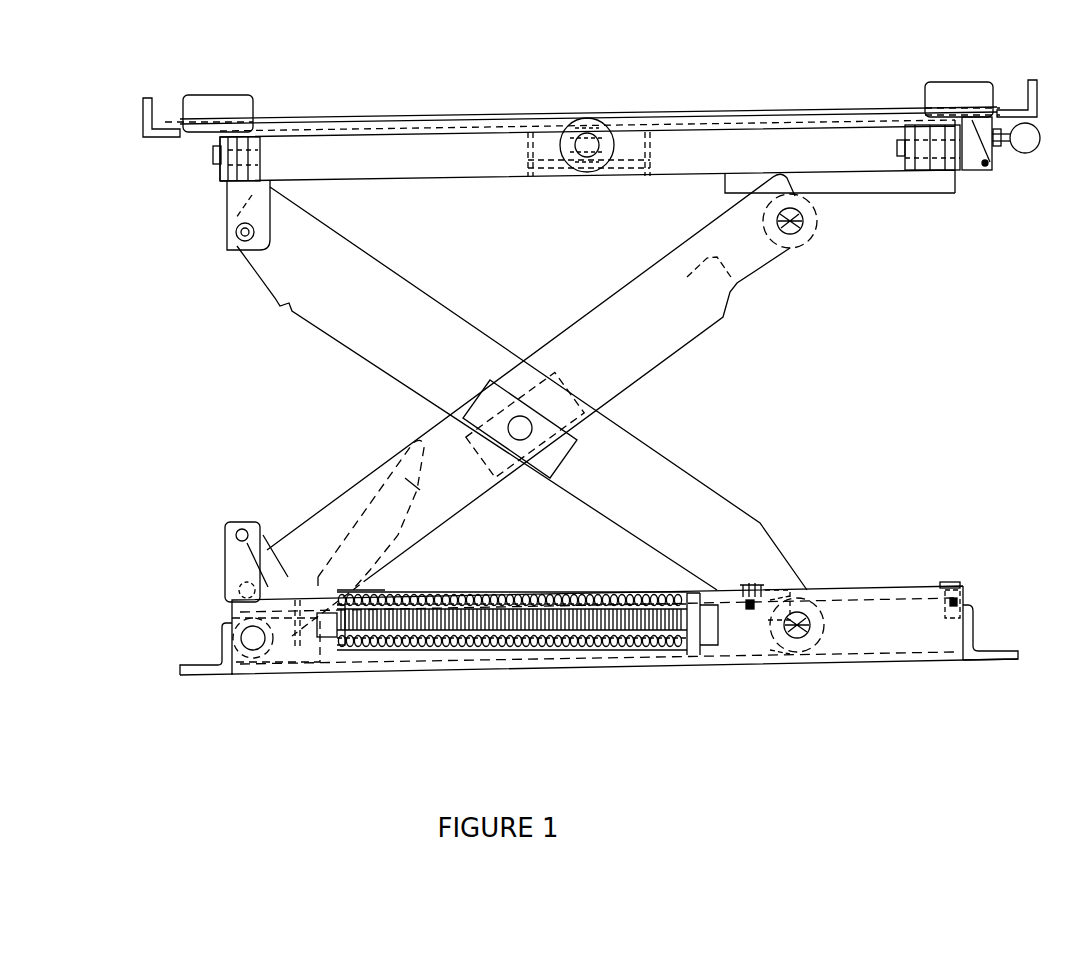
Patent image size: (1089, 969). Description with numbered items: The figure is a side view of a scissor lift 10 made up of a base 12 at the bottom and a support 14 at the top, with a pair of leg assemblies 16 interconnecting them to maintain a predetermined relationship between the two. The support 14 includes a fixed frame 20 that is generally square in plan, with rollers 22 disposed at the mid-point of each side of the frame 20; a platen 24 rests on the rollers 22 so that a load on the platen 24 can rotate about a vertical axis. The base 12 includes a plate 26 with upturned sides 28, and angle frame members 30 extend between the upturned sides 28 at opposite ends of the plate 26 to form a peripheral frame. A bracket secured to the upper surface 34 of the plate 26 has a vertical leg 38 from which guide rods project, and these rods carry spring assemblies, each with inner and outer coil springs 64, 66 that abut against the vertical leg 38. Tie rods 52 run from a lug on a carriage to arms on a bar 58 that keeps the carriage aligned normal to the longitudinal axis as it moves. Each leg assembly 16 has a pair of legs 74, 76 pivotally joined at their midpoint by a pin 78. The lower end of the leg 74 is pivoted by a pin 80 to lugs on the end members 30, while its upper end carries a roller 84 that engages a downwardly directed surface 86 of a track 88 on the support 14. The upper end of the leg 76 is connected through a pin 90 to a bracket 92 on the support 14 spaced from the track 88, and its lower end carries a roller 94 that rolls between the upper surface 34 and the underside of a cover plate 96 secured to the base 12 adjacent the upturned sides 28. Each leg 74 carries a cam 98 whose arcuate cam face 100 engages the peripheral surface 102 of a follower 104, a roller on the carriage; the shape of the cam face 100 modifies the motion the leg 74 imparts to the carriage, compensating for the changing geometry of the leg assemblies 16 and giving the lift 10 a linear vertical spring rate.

The lift 10 is at (775, 312).
The base 12 is at (860, 665).
The support 14 is at (968, 176).
The leg assembly 16 is at (652, 410).
The fixed frame 20 is at (455, 165).
The rollers 22 is at (240, 135).
The platen 24 is at (510, 112).
The plate 26 is at (618, 658).
The upturned sides 28 is at (290, 660).
The angle frame members 30 is at (218, 640).
The upper surface 34 is at (930, 655).
The vertical leg 38 is at (690, 660).
The tie rods 52 is at (228, 552).
The bar 58 is at (237, 590).
The inner coil spring 64 is at (512, 655).
The outer coil spring 66 is at (555, 655).
The leg 74 is at (521, 405).
The leg 76 is at (522, 388).
The pin 78 is at (520, 428).
The pin 80 is at (252, 650).
The roller 84 is at (812, 238).
The downwardly directed surface 86 is at (865, 195).
The track 88 is at (920, 200).
The pin 90 is at (240, 238).
The bracket 92 is at (237, 192).
The roller 94 is at (812, 606).
The cover plate 96 is at (885, 590).
The cam 98 is at (380, 520).
The arcuate cam face 100 is at (420, 490).
The peripheral surface 102 is at (385, 592).
The follower 104 is at (368, 655).